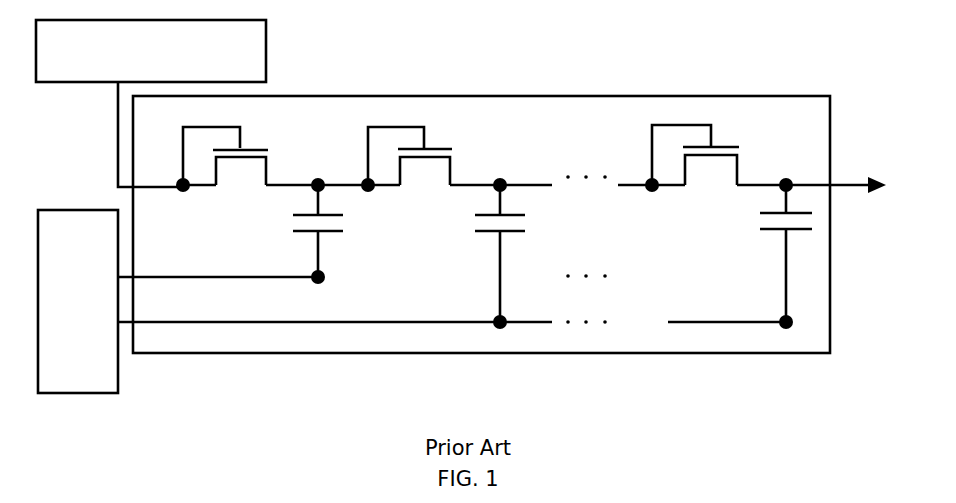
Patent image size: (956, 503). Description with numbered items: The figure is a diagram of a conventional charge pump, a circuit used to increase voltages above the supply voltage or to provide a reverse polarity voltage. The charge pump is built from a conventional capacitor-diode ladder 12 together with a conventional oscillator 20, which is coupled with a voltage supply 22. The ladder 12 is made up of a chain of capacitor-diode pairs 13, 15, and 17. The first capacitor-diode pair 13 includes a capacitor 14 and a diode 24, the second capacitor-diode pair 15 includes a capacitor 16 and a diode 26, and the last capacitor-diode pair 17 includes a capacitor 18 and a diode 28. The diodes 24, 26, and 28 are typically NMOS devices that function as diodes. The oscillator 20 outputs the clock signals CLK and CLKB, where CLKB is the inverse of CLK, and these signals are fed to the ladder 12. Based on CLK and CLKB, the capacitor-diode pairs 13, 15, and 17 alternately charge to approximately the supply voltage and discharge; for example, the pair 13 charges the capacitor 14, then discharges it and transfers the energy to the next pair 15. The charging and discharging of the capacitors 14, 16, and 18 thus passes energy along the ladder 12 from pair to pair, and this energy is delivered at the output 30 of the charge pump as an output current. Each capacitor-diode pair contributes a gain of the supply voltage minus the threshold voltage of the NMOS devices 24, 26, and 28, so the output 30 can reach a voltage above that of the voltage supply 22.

The conventional capacitor-diode ladder 12 is at (585, 95).
The capacitor-diode pair 13 is at (298, 251).
The capacitor 14 is at (340, 265).
The capacitor-diode pair 15 is at (458, 249).
The capacitor 16 is at (517, 265).
The capacitor-diode pair 17 is at (724, 252).
The capacitor 18 is at (767, 260).
The conventional oscillator 20 is at (60, 395).
The voltage supply 22 is at (267, 38).
The diode 24 is at (278, 112).
The diode 26 is at (452, 112).
The diode 28 is at (733, 106).
The output 30 is at (845, 184).